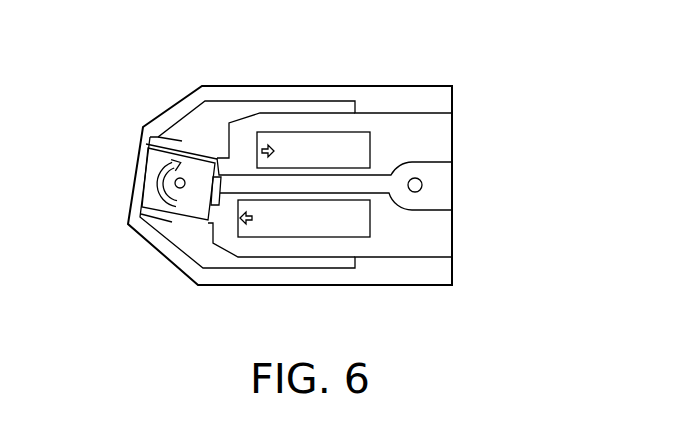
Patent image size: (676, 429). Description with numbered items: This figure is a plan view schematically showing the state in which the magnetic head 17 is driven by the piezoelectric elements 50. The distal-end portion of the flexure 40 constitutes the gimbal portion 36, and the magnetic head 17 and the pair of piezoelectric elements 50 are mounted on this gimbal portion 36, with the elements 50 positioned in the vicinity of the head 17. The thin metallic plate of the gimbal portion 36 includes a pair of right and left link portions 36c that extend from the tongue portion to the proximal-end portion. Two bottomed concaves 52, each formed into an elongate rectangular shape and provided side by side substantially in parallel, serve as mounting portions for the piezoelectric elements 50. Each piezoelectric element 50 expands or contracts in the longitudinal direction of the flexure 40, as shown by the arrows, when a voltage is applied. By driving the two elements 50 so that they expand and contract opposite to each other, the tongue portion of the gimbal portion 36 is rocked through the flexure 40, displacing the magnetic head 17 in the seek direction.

The gimbal portion 36 is at (363, 86).
The link portions 36c is at (221, 86).
The flexure 40 is at (443, 137).
The piezoelectric elements 50 is at (283, 139).
The concaves 52 is at (317, 132).
The magnetic head 17 is at (160, 157).